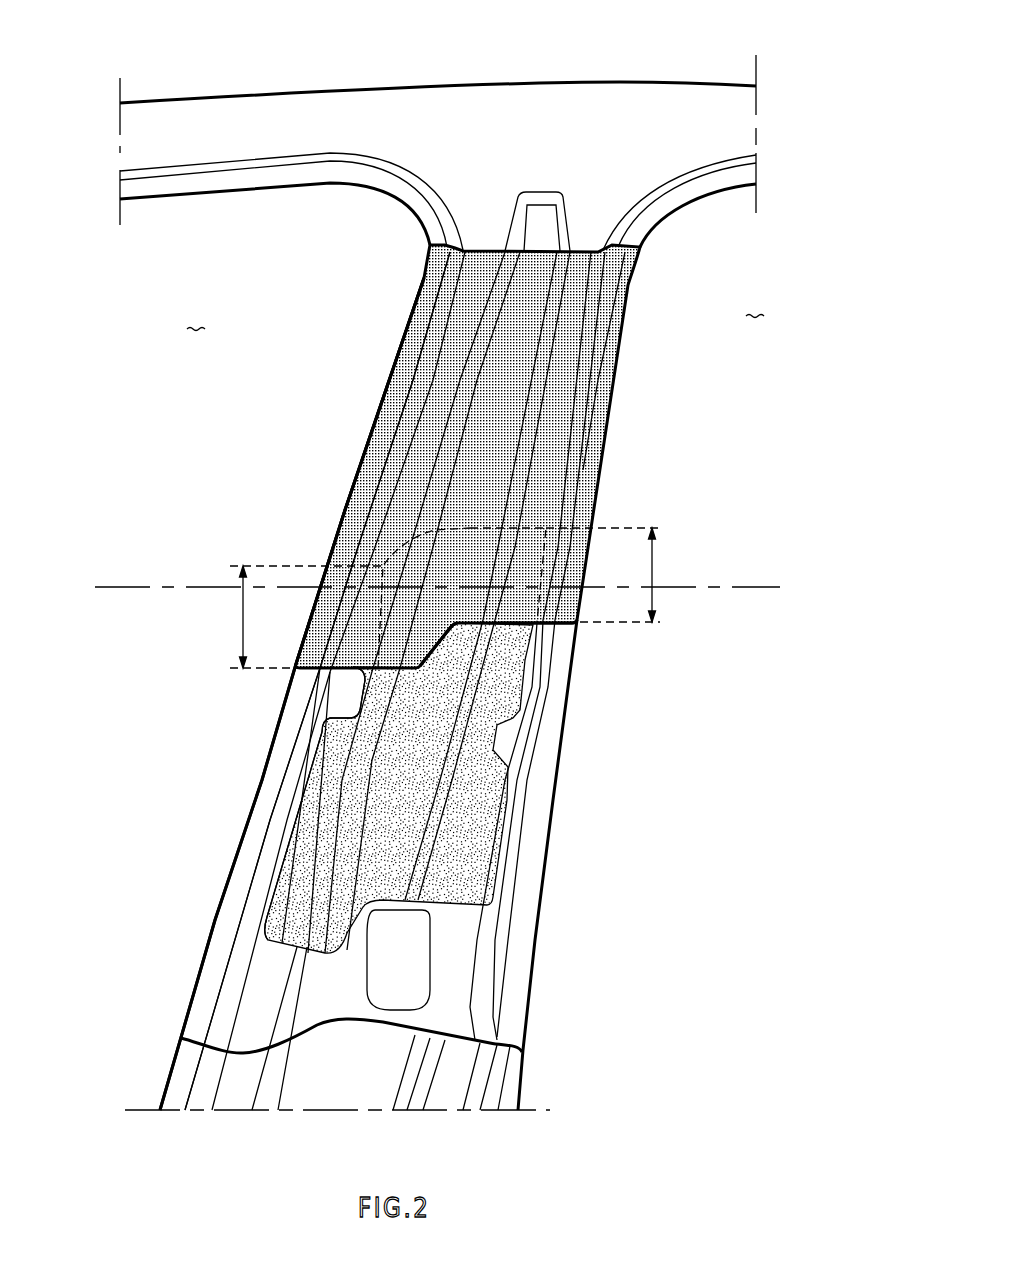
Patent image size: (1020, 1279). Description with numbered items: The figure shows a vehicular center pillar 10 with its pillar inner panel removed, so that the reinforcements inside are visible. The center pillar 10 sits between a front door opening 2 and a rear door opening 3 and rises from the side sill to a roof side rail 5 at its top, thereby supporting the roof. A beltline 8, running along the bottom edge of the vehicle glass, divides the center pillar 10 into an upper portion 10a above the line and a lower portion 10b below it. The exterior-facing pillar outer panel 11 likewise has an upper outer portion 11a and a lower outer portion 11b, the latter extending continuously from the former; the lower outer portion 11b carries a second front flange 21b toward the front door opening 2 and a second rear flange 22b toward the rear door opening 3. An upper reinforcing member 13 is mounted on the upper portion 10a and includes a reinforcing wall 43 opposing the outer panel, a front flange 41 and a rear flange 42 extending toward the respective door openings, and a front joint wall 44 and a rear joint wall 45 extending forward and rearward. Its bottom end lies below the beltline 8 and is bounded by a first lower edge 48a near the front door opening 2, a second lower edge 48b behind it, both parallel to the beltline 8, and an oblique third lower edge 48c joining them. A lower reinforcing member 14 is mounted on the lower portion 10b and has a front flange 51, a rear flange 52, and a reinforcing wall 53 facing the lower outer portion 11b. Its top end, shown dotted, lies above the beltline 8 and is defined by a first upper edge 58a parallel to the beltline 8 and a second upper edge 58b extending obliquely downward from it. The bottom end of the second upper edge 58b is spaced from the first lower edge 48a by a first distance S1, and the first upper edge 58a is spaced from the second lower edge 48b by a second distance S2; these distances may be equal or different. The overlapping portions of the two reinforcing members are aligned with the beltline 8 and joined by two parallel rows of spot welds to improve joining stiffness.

The roof side rail 5 is at (543, 70).
The front door opening 2 is at (196, 314).
The rear door opening 3 is at (755, 300).
The beltline 8 is at (128, 598).
The vehicular center pillar 10 is at (392, 677).
The upper portion 10a is at (438, 677).
The lower portion 10b is at (363, 681).
The pillar outer panel 11 is at (259, 742).
The upper outer portion 11a is at (411, 317).
The lower outer portion 11b is at (243, 812).
The upper reinforcing member 13 is at (438, 677).
The lower reinforcing member 14 is at (389, 816).
The second front flange 21b is at (250, 855).
The second rear flange 22b is at (535, 821).
The front flange 41 is at (385, 426).
The rear flange 42 is at (597, 451).
The reinforcing wall 43 is at (527, 322).
The front joint wall 44 is at (390, 478).
The rear joint wall 45 is at (565, 370).
The first lower edge 48a is at (348, 672).
The second lower edge 48b is at (518, 624).
The third lower edge 48c is at (437, 647).
The front flange 51 is at (290, 900).
The rear flange 52 is at (487, 851).
The reinforcing wall 53 is at (413, 872).
The first upper edge 58a is at (505, 528).
The second upper edge 58b is at (355, 548).
The first distance S1 is at (296, 617).
The second distance S2 is at (617, 575).